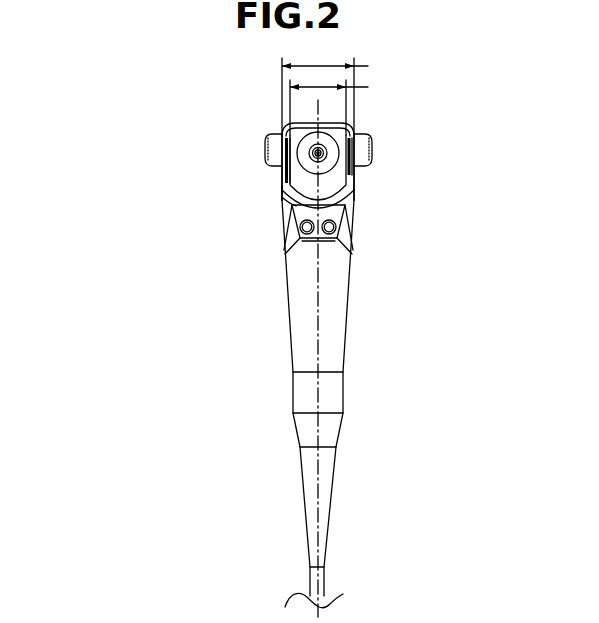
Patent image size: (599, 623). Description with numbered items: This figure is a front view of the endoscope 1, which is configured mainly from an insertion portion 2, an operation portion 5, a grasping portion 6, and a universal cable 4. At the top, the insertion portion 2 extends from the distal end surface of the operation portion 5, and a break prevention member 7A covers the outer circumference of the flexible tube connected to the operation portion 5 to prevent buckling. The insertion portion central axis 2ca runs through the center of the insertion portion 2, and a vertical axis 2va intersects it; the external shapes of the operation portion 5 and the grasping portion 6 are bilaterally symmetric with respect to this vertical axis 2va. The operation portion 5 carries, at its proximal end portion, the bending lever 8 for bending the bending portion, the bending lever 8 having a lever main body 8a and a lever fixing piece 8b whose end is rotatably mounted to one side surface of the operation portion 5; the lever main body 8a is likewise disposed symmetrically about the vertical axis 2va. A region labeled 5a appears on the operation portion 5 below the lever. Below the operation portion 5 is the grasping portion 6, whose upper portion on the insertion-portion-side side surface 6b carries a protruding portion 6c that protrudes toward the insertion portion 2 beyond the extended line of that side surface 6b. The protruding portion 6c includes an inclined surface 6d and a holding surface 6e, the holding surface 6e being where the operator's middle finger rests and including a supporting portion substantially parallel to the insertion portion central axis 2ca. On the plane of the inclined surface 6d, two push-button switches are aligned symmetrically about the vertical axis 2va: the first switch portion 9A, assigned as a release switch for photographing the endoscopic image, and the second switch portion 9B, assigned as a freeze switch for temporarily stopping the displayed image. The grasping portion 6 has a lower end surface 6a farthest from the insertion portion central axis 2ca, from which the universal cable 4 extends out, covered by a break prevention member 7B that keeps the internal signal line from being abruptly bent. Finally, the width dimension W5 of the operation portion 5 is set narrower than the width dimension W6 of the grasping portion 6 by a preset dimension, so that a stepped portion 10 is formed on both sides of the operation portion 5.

The endoscope 1 is at (82, 158).
The insertion portion 2 is at (312, 161).
The vertical axis 2va is at (292, 123).
The insertion portion central axis 2ca is at (312, 149).
The universal cable 4 is at (310, 583).
The operation portion 5 is at (282, 203).
The housing lower portion 5a is at (327, 177).
The grasping portion 6 is at (286, 280).
The lower end surface 6a is at (322, 372).
The insertion-portion-side side surface 6b is at (329, 305).
The protruding portion 6c is at (455, 223).
The inclined surface 6d is at (345, 208).
The holding surface 6e is at (327, 260).
The break prevention member 7A is at (280, 198).
The break prevention member 7B is at (299, 447).
The bending lever 8 is at (375, 127).
The lever main body 8a is at (372, 152).
The lever fixing piece 8b is at (356, 170).
The first switch portion 9A is at (300, 234).
The second switch portion 9B is at (336, 231).
The stepped portion 10 is at (283, 200).
The width dimension of the operation portion W5 is at (347, 105).
The width dimension of the grasping portion W6 is at (343, 127).